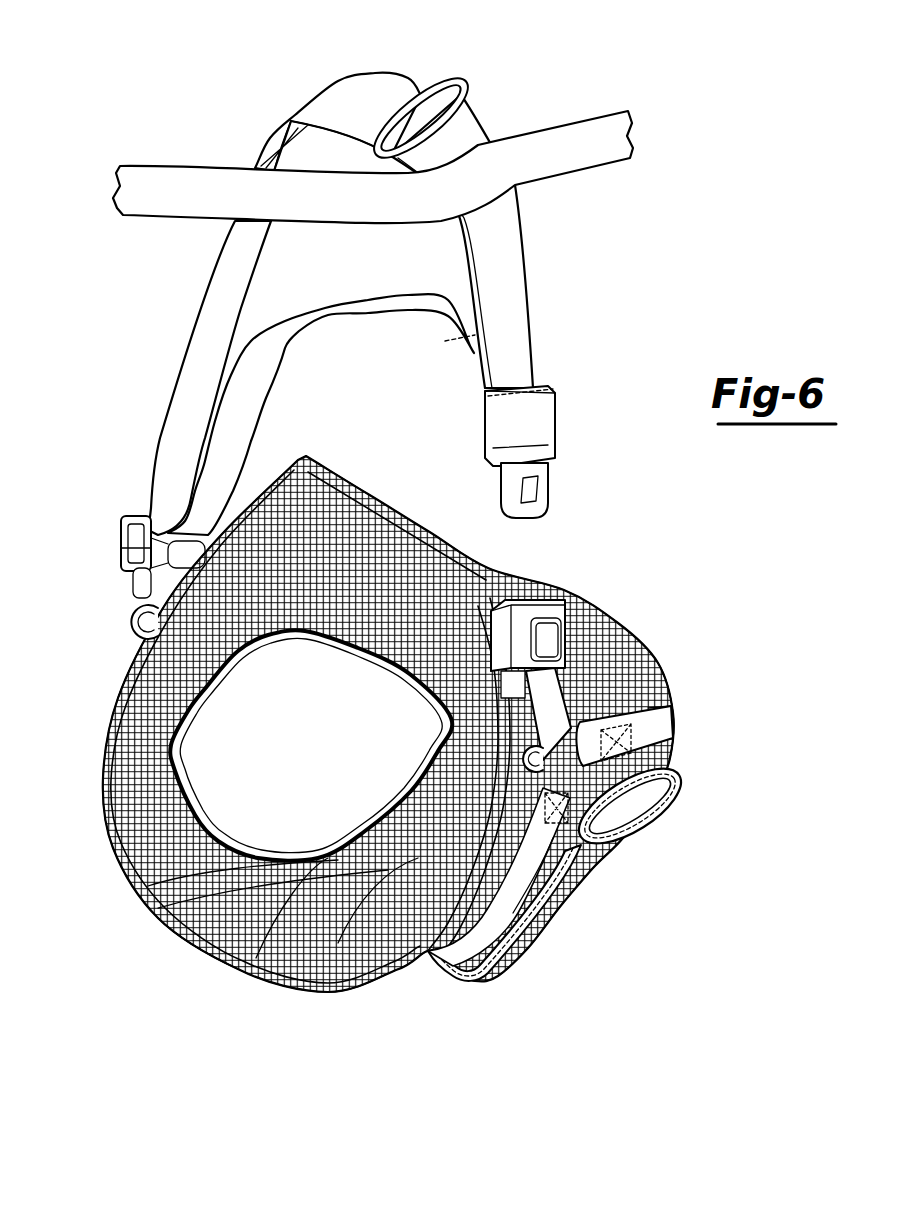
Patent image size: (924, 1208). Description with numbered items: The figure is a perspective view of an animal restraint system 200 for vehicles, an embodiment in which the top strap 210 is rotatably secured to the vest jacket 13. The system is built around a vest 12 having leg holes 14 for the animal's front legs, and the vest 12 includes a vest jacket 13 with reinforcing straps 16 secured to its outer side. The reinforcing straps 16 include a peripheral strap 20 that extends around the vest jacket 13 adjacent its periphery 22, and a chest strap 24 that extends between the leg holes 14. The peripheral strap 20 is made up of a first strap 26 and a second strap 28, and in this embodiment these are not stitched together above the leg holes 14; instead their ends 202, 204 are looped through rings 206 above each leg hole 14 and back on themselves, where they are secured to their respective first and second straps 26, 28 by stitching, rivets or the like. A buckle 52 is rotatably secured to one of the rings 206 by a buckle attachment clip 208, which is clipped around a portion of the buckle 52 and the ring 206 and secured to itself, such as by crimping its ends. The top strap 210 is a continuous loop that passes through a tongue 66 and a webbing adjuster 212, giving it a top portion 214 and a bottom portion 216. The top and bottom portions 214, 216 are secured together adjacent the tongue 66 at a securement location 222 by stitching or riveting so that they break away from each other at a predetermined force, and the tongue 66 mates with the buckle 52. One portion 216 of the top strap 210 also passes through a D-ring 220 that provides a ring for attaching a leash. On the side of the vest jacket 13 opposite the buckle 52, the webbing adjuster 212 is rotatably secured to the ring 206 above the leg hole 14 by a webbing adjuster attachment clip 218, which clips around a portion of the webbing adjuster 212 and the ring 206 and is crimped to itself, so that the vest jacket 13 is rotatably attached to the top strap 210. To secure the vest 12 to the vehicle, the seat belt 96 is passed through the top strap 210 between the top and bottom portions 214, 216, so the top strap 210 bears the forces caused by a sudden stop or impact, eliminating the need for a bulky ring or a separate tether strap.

The vest 12 is at (142, 920).
The vest jacket 13 is at (123, 780).
The leg holes 14 is at (187, 773).
The reinforcing straps 16 is at (672, 695).
The peripheral strap 20 is at (540, 883).
The periphery 22 is at (450, 717).
The chest strap 24 is at (240, 953).
The first strap 26 is at (563, 853).
The second strap 28 is at (670, 727).
The buckle 52 is at (560, 590).
The tongue 66 is at (540, 478).
The seat belt 96 is at (587, 100).
The animal restraint system 200 is at (670, 220).
The end of first strap 202 is at (563, 833).
The end of second strap 204 is at (625, 722).
The rings 206 is at (118, 618).
The buckle attachment clip 208 is at (560, 683).
The top strap 210 is at (552, 335).
The webbing adjuster 212 is at (112, 530).
The top portion 214 is at (500, 268).
The bottom portion 216 is at (440, 293).
The webbing adjuster attachment clip 218 is at (128, 580).
The D-ring 220 is at (445, 68).
The securement location 222 is at (525, 382).